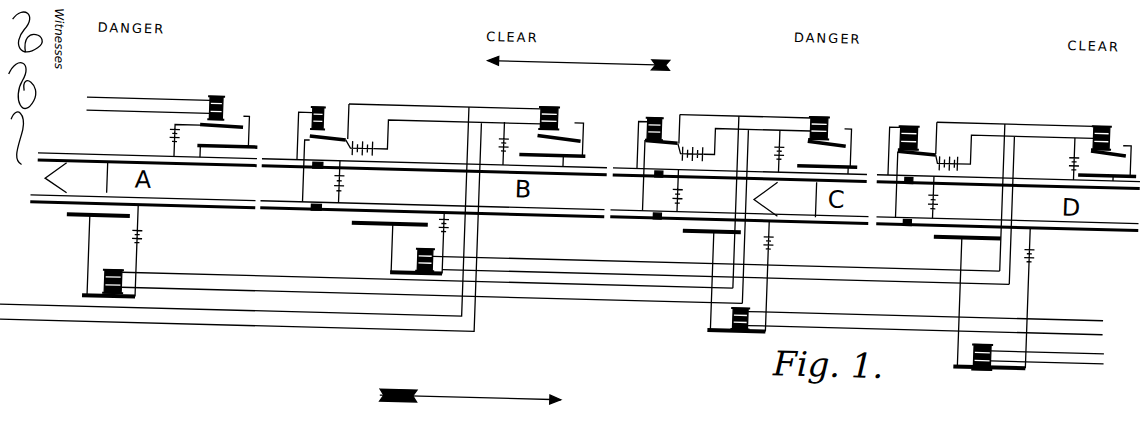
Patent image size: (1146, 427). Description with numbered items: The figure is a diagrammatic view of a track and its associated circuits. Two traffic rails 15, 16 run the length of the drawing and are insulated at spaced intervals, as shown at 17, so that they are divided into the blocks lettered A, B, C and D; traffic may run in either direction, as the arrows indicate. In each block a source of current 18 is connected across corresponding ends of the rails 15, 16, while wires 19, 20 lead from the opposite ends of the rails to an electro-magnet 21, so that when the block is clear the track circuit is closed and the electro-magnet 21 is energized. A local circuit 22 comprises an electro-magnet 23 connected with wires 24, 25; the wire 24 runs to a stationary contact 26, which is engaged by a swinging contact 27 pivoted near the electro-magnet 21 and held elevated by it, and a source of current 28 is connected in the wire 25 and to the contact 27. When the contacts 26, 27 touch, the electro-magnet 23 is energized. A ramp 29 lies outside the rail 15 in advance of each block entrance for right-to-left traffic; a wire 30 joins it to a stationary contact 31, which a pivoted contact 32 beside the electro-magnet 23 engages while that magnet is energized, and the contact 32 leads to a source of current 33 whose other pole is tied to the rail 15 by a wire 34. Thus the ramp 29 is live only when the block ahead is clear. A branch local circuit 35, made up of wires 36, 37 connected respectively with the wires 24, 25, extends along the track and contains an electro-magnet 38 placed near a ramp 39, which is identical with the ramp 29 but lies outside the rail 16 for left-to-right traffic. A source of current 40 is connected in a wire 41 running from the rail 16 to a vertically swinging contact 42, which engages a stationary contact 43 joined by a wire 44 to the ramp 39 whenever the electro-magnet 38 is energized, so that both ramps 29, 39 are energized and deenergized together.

The traffic rail 15 is at (221, 160).
The traffic rail 16 is at (209, 195).
The insulation 17 is at (319, 200).
The source of current 18 is at (350, 180).
The wire 19 is at (296, 106).
The wire 20 is at (302, 131).
The electro-magnet 21 is at (316, 100).
The local circuit 22 is at (396, 95).
The electro-magnet 23 is at (546, 93).
The wire 24 is at (446, 96).
The wire 25 is at (496, 110).
The stationary contact 26 is at (348, 90).
The swinging contact 27 is at (622, 155).
The source of current 28 is at (692, 122).
The ramp 29 is at (200, 144).
The wire 30 is at (248, 111).
The stationary contact 31 is at (222, 93).
The pivoted contact 32 is at (1099, 149).
The source of current 33 is at (169, 127).
The wire 34 is at (169, 138).
The branch local circuit 35 is at (598, 291).
The wire 36 is at (219, 270).
The wire 37 is at (270, 284).
The electro-magnet 38 is at (109, 277).
The ramp 39 is at (71, 216).
The source of current 40 is at (145, 231).
The wire 41 is at (142, 214).
The vertically swinging contact 42 is at (105, 296).
The stationary contact 43 is at (87, 292).
The wire 44 is at (92, 249).